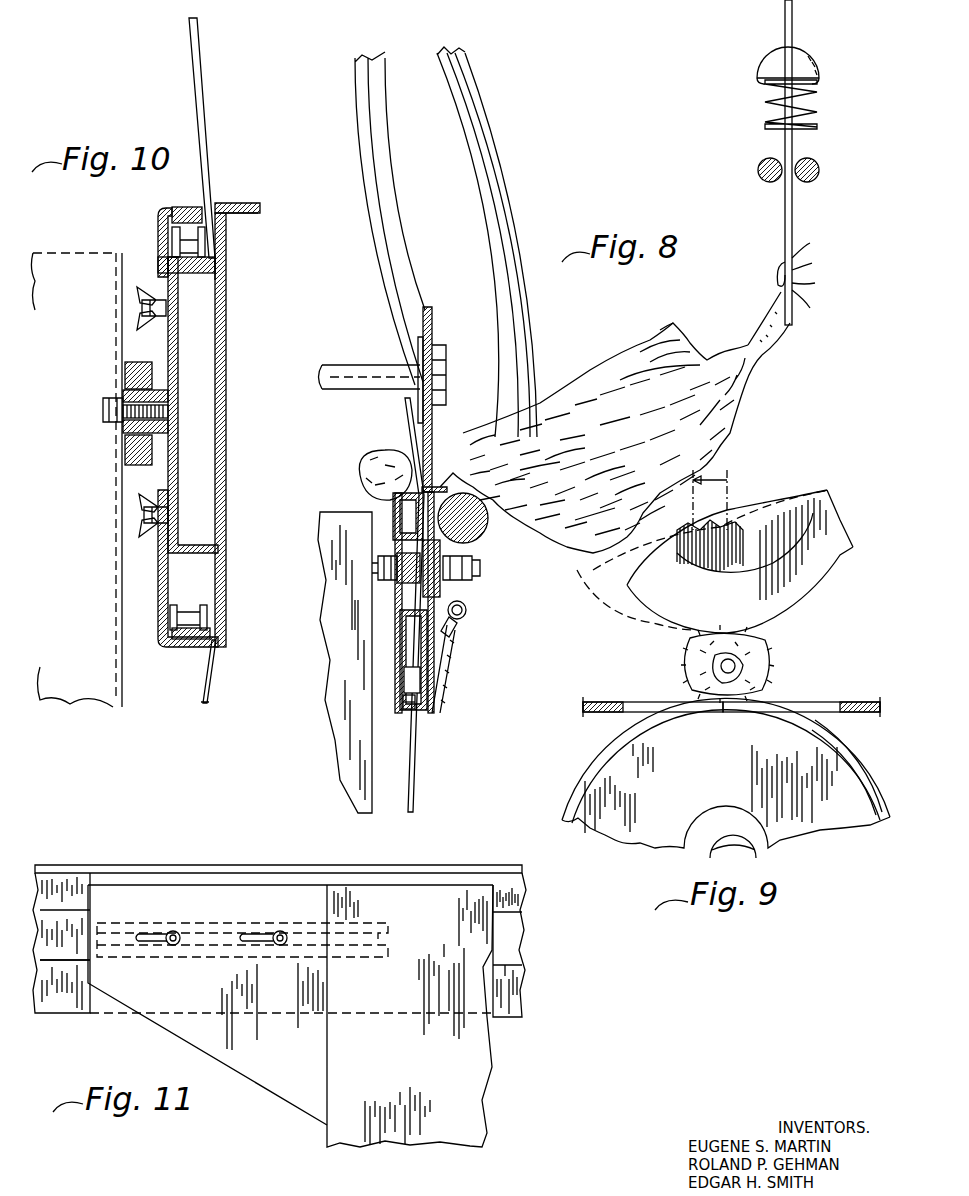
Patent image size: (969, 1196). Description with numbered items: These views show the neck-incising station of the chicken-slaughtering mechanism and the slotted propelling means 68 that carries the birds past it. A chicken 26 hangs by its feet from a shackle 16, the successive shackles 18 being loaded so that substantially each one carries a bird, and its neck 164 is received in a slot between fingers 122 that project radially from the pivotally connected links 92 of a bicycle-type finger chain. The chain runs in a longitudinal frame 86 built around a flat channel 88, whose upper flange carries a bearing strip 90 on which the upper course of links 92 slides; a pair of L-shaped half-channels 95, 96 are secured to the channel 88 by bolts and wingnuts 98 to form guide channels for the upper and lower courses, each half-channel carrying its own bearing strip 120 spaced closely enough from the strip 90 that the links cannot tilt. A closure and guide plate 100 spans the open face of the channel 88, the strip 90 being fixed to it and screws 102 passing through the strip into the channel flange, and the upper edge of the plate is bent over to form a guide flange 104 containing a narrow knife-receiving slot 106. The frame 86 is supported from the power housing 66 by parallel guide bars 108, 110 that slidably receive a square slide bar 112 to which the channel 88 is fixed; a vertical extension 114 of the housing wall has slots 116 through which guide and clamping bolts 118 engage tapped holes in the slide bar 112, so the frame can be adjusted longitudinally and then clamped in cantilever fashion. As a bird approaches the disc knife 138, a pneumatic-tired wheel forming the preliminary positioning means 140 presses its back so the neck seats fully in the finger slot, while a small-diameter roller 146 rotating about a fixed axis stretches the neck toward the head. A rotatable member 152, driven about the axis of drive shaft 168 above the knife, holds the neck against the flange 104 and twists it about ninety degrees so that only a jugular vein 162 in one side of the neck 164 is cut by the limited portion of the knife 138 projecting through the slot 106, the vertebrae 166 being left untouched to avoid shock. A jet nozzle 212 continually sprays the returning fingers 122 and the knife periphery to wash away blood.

In FIG. 8, the shackle 16 is at (785, 22).
In FIG. 8, the shackle 18 is at (793, 218).
In FIG. 8, the chicken 26 is at (613, 377).
In FIG. 10, the power housing or cabinet 66 is at (125, 688).
In FIG. 8, the power housing or cabinet 66 is at (335, 585).
In FIG. 11, the power housing or cabinet 66 is at (353, 1113).
In FIG. 10, the propelling means 68 is at (236, 181).
In FIG. 11, the propelling means 68 is at (533, 949).
In FIG. 10, the longitudinal frame 86 is at (240, 358).
In FIG. 10, the flat channel 88 is at (174, 365).
In FIG. 8, the flat channel 88 is at (398, 620).
In FIG. 11, the flat channel 88 is at (63, 955).
In FIG. 10, the bearing strip 90 is at (221, 265).
In FIG. 10, the links 92 is at (174, 240).
In FIG. 8, the links 92 is at (405, 712).
In FIG. 10, the half-channel 95 is at (160, 268).
In FIG. 8, the half-channel 95 is at (396, 507).
In FIG. 11, the half-channel 95 is at (62, 876).
In FIG. 10, the half-channel 96 is at (158, 575).
In FIG. 8, the half-channel 96 is at (393, 670).
In FIG. 11, the half-channel 96 is at (60, 998).
In FIG. 10, the wingnuts 98 is at (143, 308).
In FIG. 10, the closure and guide plate 100 is at (228, 418).
In FIG. 10, the screws 102 is at (195, 275).
In FIG. 10, the flange 104 is at (258, 205).
In FIG. 8, the flange 104 is at (443, 490).
In FIG. 9, the flange 104 is at (617, 684).
In FIG. 11, the flange 104 is at (433, 864).
In FIG. 10, the knife-receiving slot 106 is at (252, 214).
In FIG. 9, the knife-receiving slot 106 is at (810, 705).
In FIG. 10, the guide bar 108 is at (132, 460).
In FIG. 10, the guide bar 110 is at (126, 372).
In FIG. 10, the slide bar 112 is at (125, 430).
In FIG. 11, the vertical extension 114 is at (195, 1030).
In FIG. 10, the slots 116 is at (122, 395).
In FIG. 11, the slots 116 is at (168, 932).
In FIG. 10, the guide and clamping bolts 118 is at (103, 408).
In FIG. 11, the guide and clamping bolts 118 is at (175, 946).
In FIG. 10, the bearing strip 120 is at (182, 208).
In FIG. 10, the fingers 122 is at (200, 52).
In FIG. 8, the fingers 122 is at (407, 408).
In FIG. 8, the knife means 138 is at (436, 603).
In FIG. 9, the knife means 138 is at (603, 760).
In FIG. 8, the preliminary positioning means 140 is at (503, 185).
In FIG. 8, the roller 146 is at (488, 528).
In FIG. 8, the member 152 is at (432, 320).
In FIG. 9, the member 152 is at (825, 545).
In FIG. 9, the jugular vein 162 is at (766, 640).
In FIG. 9, the neck 164 is at (706, 638).
In FIG. 9, the vertebrae 166 is at (700, 688).
In FIG. 8, the drive shaft 168 is at (363, 368).
In FIG. 8, the jet nozzle 212 is at (467, 616).